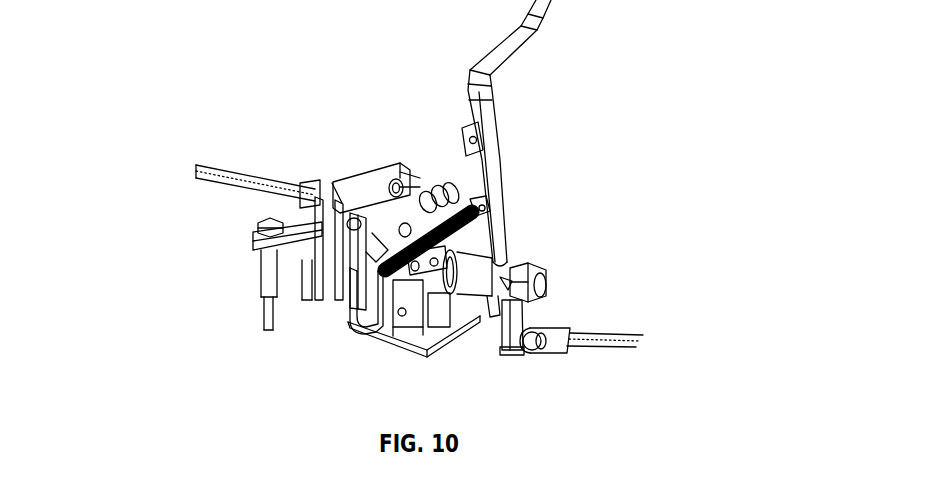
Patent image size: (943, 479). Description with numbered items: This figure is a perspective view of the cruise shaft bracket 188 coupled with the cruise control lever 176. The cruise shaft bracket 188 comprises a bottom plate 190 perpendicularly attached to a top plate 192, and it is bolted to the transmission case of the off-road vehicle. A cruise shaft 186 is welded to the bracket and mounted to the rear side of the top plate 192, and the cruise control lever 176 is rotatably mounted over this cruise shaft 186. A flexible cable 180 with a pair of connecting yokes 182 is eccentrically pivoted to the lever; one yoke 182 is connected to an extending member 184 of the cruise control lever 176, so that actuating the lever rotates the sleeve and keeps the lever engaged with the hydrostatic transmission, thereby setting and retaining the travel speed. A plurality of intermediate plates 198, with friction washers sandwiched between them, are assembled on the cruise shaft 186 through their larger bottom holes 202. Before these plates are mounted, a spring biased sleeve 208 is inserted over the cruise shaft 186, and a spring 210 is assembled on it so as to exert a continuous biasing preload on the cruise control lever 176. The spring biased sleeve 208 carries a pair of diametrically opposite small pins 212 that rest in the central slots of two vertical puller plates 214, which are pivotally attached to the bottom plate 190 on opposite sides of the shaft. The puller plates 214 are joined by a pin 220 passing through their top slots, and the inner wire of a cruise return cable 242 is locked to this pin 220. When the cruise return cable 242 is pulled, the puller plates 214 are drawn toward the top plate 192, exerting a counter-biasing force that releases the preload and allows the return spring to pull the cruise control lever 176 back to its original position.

The cruise control lever 176 is at (540, 30).
The flexible cable 180 is at (637, 346).
The connecting yoke 182 is at (556, 344).
The extending member 184 is at (518, 320).
The cruise shaft 186 is at (546, 294).
The cruise shaft bracket 188 is at (383, 151).
The bottom plate 190 is at (423, 350).
The top plate 192 is at (362, 195).
The intermediate plate 198 is at (470, 243).
The bottom hole 202 is at (466, 283).
The spring biased sleeve 208 is at (397, 270).
The spring 210 is at (392, 228).
The small pin 212 is at (395, 278).
The puller plate 214 is at (417, 212).
The pin 220 is at (400, 226).
The cruise return cable 242 is at (217, 165).